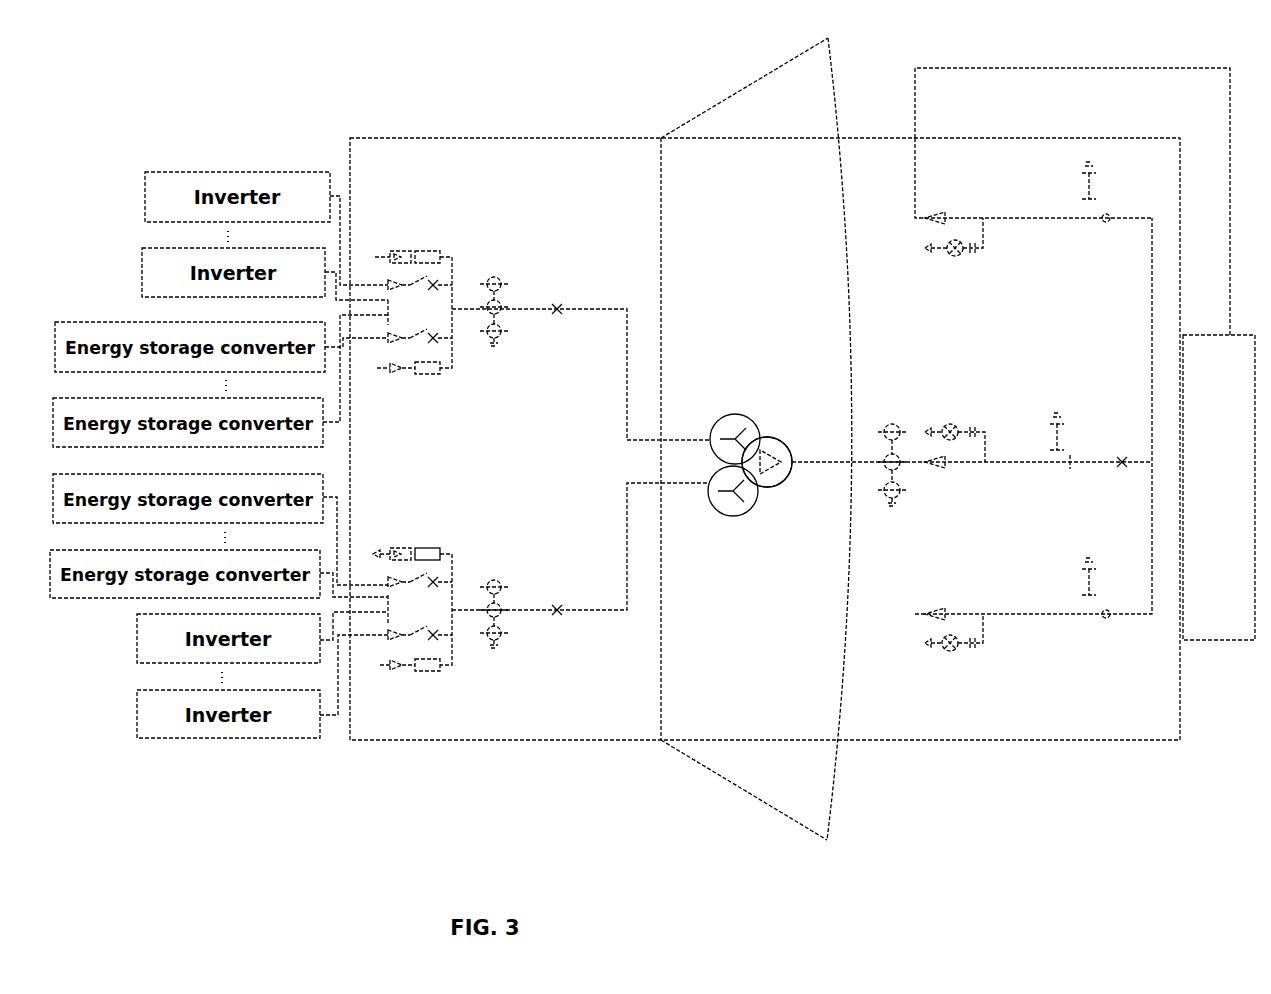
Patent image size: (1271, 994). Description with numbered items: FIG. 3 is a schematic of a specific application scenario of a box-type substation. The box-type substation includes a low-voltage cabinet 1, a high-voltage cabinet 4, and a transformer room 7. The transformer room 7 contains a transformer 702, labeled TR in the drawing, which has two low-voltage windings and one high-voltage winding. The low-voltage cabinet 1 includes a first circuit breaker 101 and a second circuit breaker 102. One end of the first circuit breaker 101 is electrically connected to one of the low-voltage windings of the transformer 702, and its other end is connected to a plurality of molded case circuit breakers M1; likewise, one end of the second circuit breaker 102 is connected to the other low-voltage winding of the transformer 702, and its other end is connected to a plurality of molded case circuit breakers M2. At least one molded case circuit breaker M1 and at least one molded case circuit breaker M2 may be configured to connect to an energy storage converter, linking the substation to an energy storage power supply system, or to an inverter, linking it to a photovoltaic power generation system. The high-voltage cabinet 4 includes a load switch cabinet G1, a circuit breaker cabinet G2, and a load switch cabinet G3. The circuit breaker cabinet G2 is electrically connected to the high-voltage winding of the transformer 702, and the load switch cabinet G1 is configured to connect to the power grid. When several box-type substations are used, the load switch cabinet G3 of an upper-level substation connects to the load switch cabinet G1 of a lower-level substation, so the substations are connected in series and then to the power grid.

The low-voltage cabinet 1 is at (450, 703).
The transformer room 7 is at (683, 668).
The molded case circuit breakers M1 is at (383, 272).
The molded case circuit breakers M2 is at (390, 652).
The first circuit breaker 101 is at (521, 275).
The second circuit breaker 102 is at (530, 648).
The transformer 702 is at (737, 534).
The transformer TR is at (767, 497).
The load switch cabinet G1 is at (1033, 197).
The circuit breaker cabinet G2 is at (1002, 459).
The load switch cabinet G3 is at (1033, 434).
The high-voltage cabinet 4 is at (1152, 715).